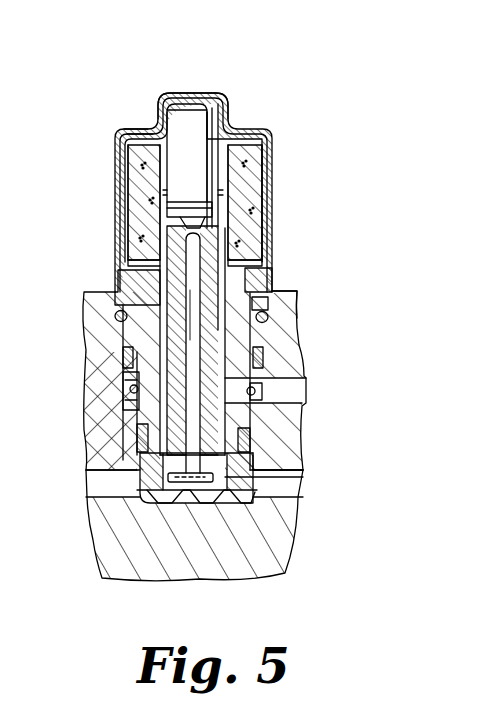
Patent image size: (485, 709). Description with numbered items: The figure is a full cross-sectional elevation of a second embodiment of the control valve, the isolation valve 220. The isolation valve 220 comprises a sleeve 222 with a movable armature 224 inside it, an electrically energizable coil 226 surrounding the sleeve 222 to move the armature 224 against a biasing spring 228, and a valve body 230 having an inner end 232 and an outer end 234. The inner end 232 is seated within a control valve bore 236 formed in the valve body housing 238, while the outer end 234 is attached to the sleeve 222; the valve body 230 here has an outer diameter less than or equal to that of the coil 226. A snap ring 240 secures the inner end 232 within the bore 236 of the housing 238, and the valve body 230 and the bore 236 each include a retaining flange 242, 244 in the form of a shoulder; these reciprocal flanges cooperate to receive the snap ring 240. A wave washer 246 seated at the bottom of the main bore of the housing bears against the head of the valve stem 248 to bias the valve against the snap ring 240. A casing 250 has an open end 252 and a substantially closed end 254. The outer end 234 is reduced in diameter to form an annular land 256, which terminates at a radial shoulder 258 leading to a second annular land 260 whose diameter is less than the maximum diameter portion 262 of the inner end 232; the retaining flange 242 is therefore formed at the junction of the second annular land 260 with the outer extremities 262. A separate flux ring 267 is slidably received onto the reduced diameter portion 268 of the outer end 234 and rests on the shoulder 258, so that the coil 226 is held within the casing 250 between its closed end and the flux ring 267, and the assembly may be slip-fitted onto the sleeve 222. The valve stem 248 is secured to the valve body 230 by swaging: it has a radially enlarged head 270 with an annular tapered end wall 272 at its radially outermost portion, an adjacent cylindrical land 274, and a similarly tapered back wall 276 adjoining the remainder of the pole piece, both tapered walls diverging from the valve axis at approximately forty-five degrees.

The isolation valve 220 is at (132, 96).
The sleeve 222 is at (190, 93).
The movable armature 224 is at (224, 118).
The electrically energizable coil 226 is at (260, 158).
The biasing spring 228 is at (216, 206).
The valve body 230 is at (186, 312).
The inner end 232 is at (140, 452).
The outer end 234 is at (122, 285).
The control valve bore 236 is at (118, 284).
The valve body housing 238 is at (88, 298).
The snap ring 240 is at (128, 337).
The retaining flange 242 is at (268, 318).
The retaining flange 244 is at (296, 342).
The wave washer 246 is at (140, 502).
The valve stem 248 is at (124, 392).
The casing 250 is at (118, 150).
The open end 252 is at (118, 236).
The substantially closed end 254 is at (120, 131).
The annular land 256 is at (116, 262).
The radial shoulder 258 is at (293, 291).
The second annular land 260 is at (121, 312).
The maximum diameter portion 262 is at (140, 437).
The flux ring 267 is at (260, 262).
The reduced diameter portion 268 is at (272, 272).
The radially enlarged head 270 is at (262, 482).
The annular tapered end wall 272 is at (257, 493).
The cylindrical land 274 is at (250, 486).
The tapered back wall 276 is at (268, 462).